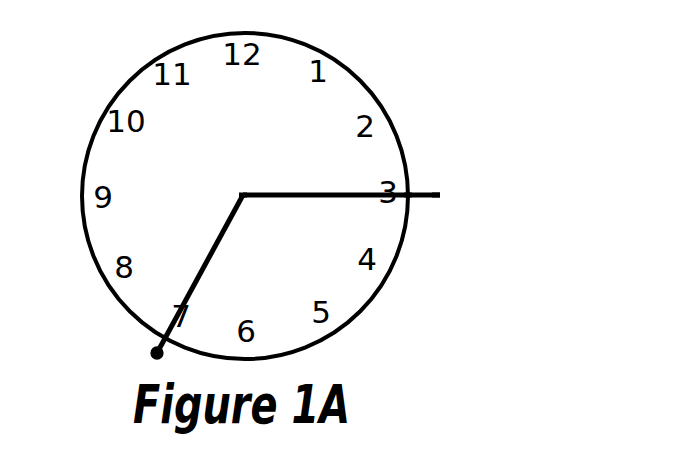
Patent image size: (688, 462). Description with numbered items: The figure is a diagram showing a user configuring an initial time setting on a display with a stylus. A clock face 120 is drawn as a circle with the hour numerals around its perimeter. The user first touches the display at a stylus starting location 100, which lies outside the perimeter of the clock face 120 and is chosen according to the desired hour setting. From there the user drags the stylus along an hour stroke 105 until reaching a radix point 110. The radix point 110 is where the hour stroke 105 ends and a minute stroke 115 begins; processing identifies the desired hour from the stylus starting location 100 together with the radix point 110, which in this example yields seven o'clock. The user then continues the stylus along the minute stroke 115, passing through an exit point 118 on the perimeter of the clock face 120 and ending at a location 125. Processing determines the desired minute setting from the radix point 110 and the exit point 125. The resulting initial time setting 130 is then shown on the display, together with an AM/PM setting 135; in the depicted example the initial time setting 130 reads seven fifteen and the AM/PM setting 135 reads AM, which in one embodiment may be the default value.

The stylus starting location 100 is at (150, 350).
The hour stroke 105 is at (197, 270).
The radix point 110 is at (243, 195).
The minute stroke 115 is at (342, 192).
The exit point 118 is at (408, 196).
The clock face 120 is at (362, 79).
The location 125 is at (440, 192).
The initial time setting 130 is at (443, 303).
The AM/PM setting 135 is at (497, 333).